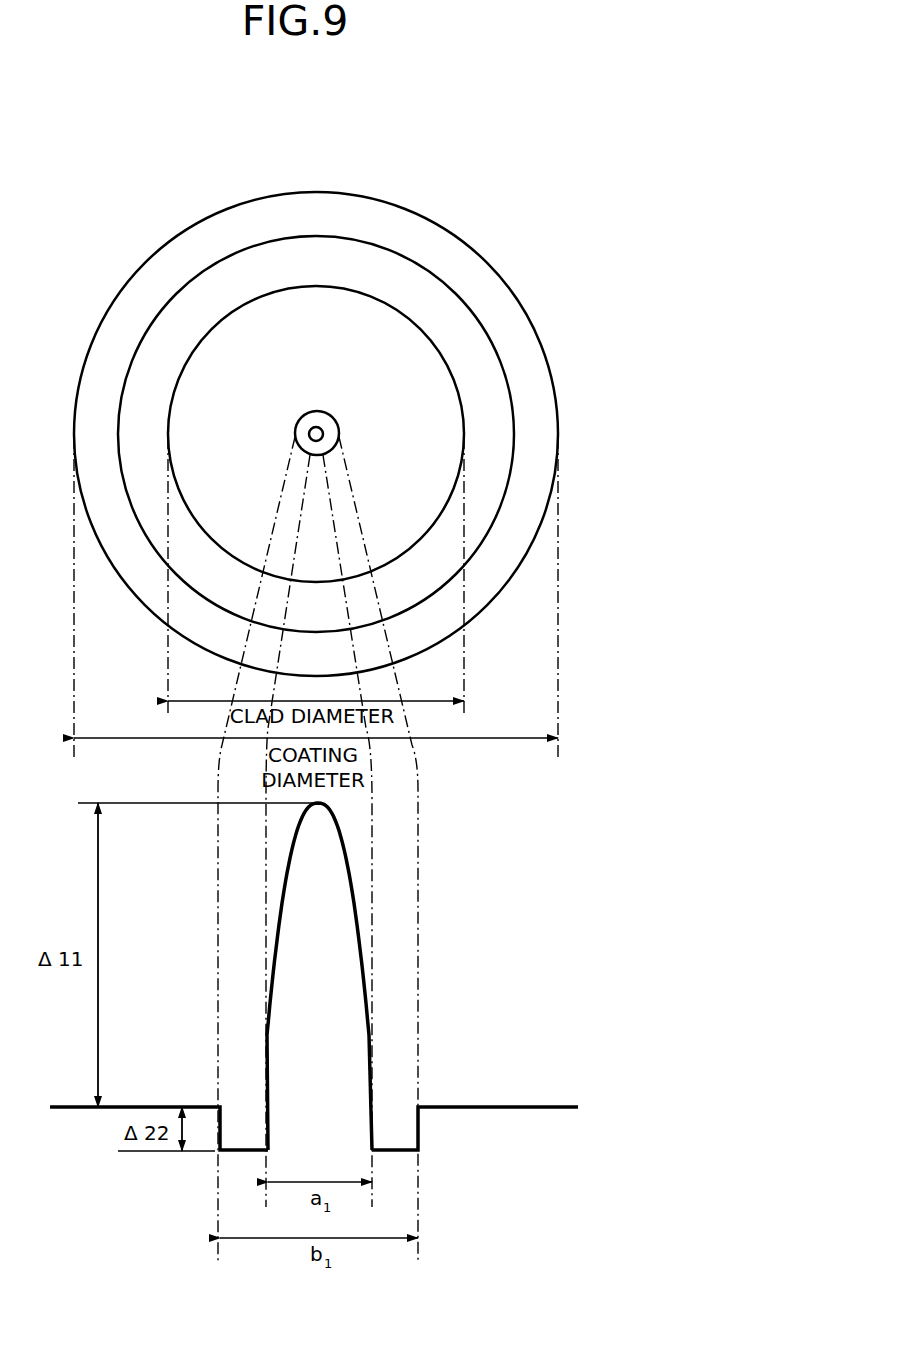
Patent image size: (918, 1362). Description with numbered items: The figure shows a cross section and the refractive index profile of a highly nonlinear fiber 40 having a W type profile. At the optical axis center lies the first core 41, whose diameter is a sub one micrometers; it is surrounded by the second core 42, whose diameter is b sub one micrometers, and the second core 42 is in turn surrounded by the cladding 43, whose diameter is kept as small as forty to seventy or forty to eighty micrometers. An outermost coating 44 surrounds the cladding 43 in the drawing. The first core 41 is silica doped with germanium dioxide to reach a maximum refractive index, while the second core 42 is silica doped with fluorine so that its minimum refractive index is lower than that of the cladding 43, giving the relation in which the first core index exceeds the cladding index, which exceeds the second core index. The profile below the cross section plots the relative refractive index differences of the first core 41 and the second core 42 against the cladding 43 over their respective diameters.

The highly nonlinear fiber 40 is at (128, 256).
The first core 41 is at (321, 428).
The second core 42 is at (318, 411).
The cladding 43 is at (433, 412).
The coating 44 is at (435, 300).